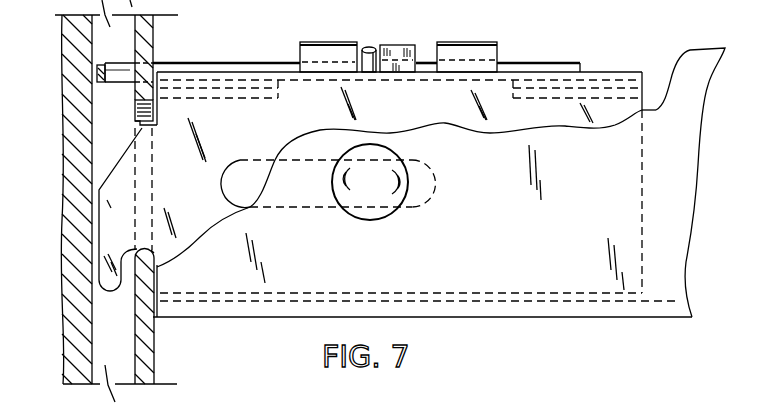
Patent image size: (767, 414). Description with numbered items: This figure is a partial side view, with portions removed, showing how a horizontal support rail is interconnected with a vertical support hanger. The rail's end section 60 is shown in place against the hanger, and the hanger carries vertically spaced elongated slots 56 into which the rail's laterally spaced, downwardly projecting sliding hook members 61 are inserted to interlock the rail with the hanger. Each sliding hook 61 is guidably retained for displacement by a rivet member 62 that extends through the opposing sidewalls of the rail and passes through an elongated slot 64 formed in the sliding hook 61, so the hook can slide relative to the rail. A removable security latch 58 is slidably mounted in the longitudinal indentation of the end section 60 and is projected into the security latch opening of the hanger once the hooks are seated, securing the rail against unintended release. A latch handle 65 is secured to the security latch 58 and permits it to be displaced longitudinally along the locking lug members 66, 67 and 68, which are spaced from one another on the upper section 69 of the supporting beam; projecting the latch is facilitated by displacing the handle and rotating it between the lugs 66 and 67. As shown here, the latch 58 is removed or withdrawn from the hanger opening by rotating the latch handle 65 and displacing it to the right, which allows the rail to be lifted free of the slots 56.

The elongated slot 56 is at (140, 118).
The security latch 58 is at (128, 63).
The end section 60 is at (228, 118).
The sliding hook member 61 is at (126, 238).
The rivet member 62 is at (395, 148).
The elongated slot 64 is at (241, 160).
The latch handle 65 is at (367, 47).
The locking lug member 66 is at (319, 43).
The locking lug 67 is at (403, 45).
The locking lug member 68 is at (472, 42).
The upper section 69 is at (598, 72).